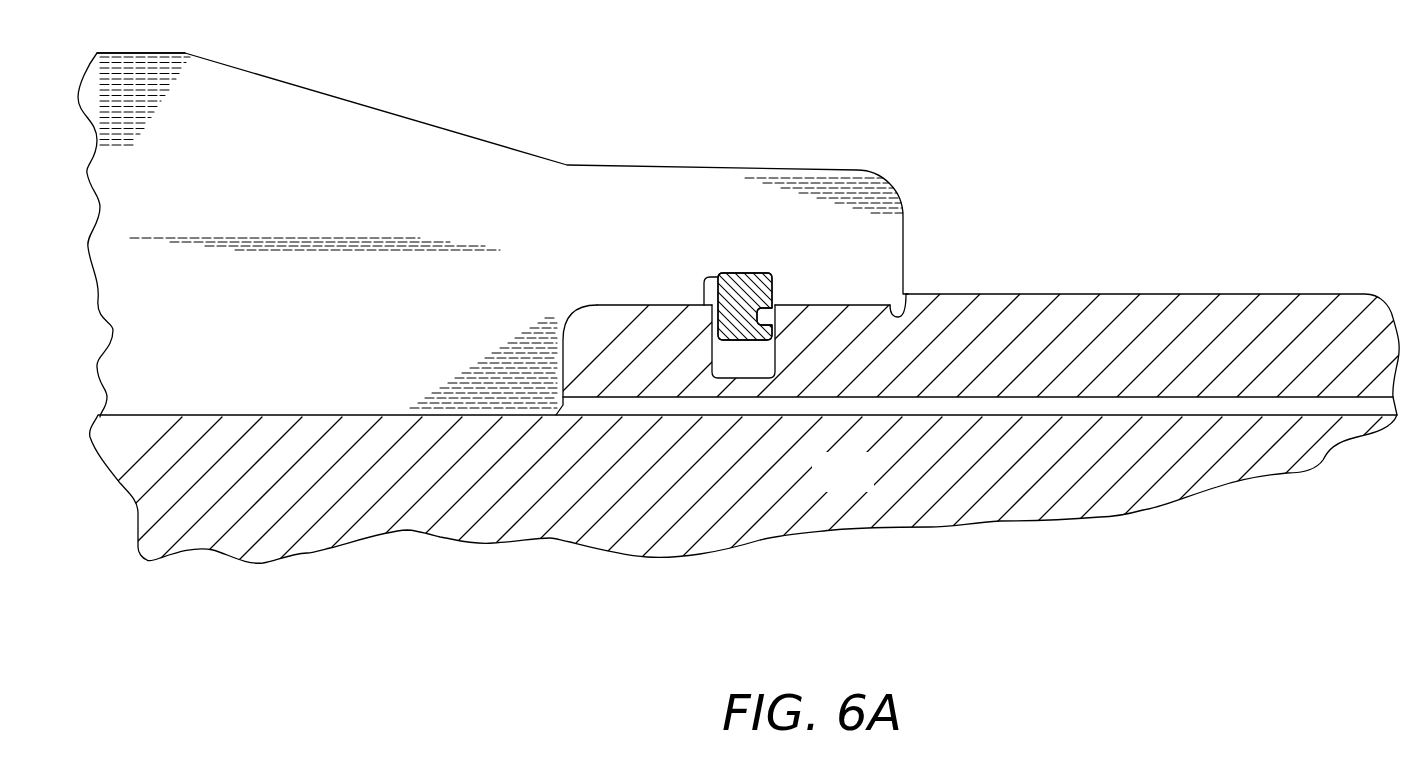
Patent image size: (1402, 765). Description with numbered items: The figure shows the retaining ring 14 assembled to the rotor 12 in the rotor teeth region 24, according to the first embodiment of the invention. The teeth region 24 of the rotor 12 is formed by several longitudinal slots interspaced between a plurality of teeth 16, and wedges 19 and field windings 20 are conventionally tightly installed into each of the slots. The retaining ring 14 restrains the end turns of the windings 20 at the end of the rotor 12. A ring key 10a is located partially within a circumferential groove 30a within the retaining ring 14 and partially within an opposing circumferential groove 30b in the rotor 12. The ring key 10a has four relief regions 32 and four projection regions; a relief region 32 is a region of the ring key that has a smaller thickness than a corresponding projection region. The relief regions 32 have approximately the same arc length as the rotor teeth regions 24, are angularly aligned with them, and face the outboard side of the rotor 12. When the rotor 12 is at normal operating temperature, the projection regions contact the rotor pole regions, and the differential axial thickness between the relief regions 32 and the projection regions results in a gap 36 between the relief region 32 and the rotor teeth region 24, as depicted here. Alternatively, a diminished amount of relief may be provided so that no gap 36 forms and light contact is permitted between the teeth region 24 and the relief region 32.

The ring key 10a is at (776, 273).
The rotor 12 is at (573, 497).
The retaining ring 14 is at (333, 137).
The teeth 16 is at (1123, 292).
The wedges 19 is at (1290, 323).
The field windings 20 is at (1163, 457).
The teeth region 24 is at (859, 487).
The circumferential groove 30a is at (710, 274).
The circumferential groove 30b is at (752, 353).
The relief region 32 is at (718, 288).
The gap 36 is at (708, 317).